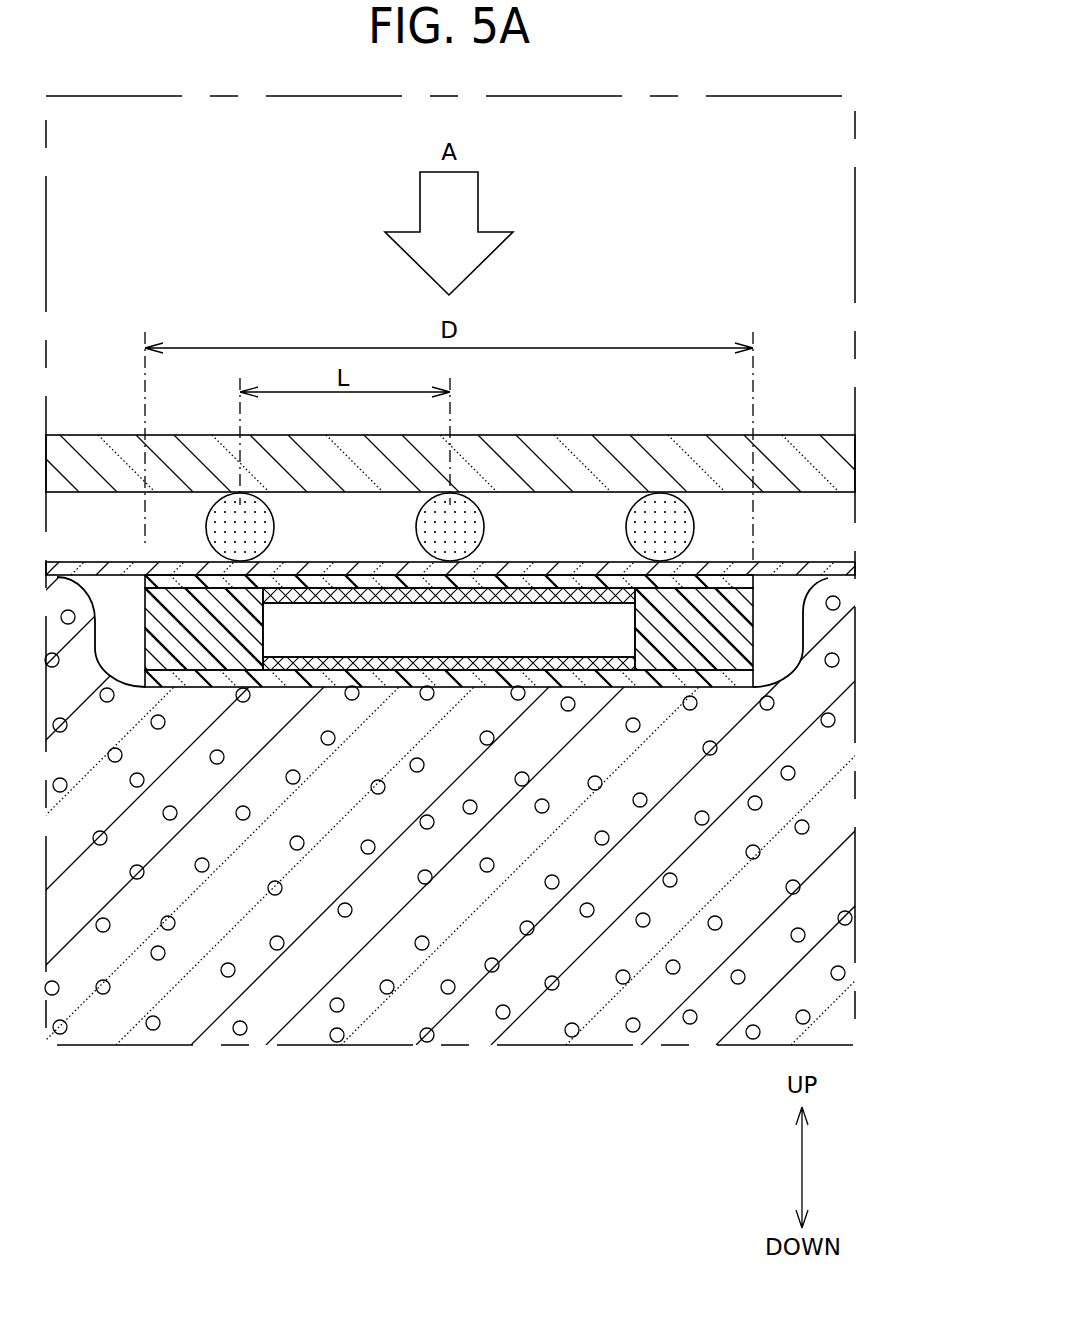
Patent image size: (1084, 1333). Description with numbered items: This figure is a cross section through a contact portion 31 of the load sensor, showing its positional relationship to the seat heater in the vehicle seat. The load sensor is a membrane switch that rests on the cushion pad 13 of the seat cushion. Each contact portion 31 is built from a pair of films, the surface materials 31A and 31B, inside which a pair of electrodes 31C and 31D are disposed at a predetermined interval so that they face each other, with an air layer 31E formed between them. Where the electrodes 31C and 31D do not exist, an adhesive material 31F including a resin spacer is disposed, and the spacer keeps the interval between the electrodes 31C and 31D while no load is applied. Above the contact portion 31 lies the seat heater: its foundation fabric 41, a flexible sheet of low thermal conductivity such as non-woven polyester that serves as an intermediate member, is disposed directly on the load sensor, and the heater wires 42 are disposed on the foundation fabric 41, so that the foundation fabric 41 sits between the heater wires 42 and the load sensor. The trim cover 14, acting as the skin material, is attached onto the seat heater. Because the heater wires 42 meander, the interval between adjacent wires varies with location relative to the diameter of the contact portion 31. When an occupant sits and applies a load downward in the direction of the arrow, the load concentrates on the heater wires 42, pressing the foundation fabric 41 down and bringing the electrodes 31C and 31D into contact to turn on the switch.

The cushion pad 13 is at (795, 795).
The trim cover 14 is at (782, 463).
The foundation fabric 41 is at (735, 567).
The heater wire 42 is at (212, 520).
The contact portion 31 is at (777, 670).
The surface material 31A is at (720, 582).
The surface material 31B is at (722, 683).
The electrode 31C is at (385, 600).
The electrode 31D is at (495, 665).
The air layer 31E is at (553, 628).
The adhesive material 31F is at (718, 627).